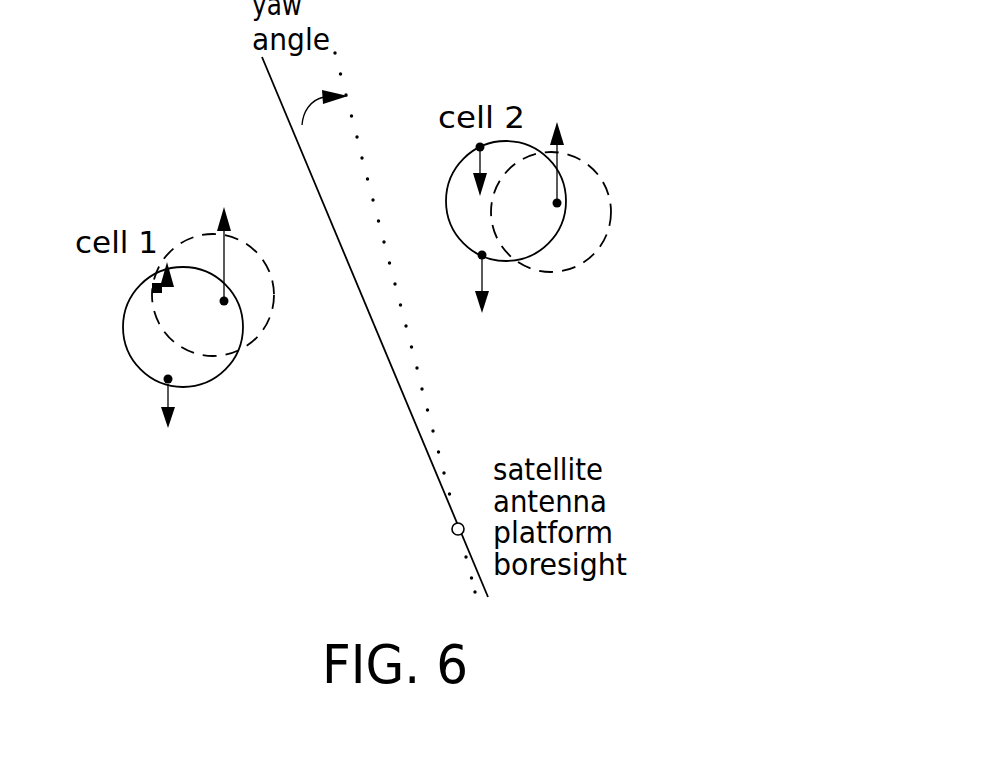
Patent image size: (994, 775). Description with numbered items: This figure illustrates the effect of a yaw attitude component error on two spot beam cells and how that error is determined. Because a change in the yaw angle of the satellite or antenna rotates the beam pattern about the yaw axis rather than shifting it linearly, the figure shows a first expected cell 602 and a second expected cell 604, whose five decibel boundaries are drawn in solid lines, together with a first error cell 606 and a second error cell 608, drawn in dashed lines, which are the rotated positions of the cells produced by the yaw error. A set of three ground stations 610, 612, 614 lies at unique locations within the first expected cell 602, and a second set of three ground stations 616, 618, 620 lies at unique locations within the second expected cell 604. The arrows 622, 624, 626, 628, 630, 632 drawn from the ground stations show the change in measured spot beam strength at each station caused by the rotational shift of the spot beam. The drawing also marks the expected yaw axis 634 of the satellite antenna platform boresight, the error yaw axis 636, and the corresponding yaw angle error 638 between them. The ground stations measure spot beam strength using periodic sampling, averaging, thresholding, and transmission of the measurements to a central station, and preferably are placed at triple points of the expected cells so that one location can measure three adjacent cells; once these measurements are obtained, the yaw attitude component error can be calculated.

The first expected cell 602 is at (130, 360).
The second expected cell 604 is at (454, 229).
The first error cell 606 is at (263, 332).
The second error cell 608 is at (612, 223).
The ground station 610 is at (154, 289).
The ground station 612 is at (170, 381).
The ground station 614 is at (228, 301).
The ground station 616 is at (480, 147).
The ground station 618 is at (484, 258).
The ground station 620 is at (560, 203).
The arrow 622 is at (167, 262).
The arrow 624 is at (169, 428).
The arrow 626 is at (224, 208).
The arrow 628 is at (480, 187).
The arrow 630 is at (482, 313).
The arrow 632 is at (561, 131).
The expected yaw axis 634 is at (398, 385).
The error yaw axis 636 is at (428, 418).
The yaw angle error 638 is at (322, 108).